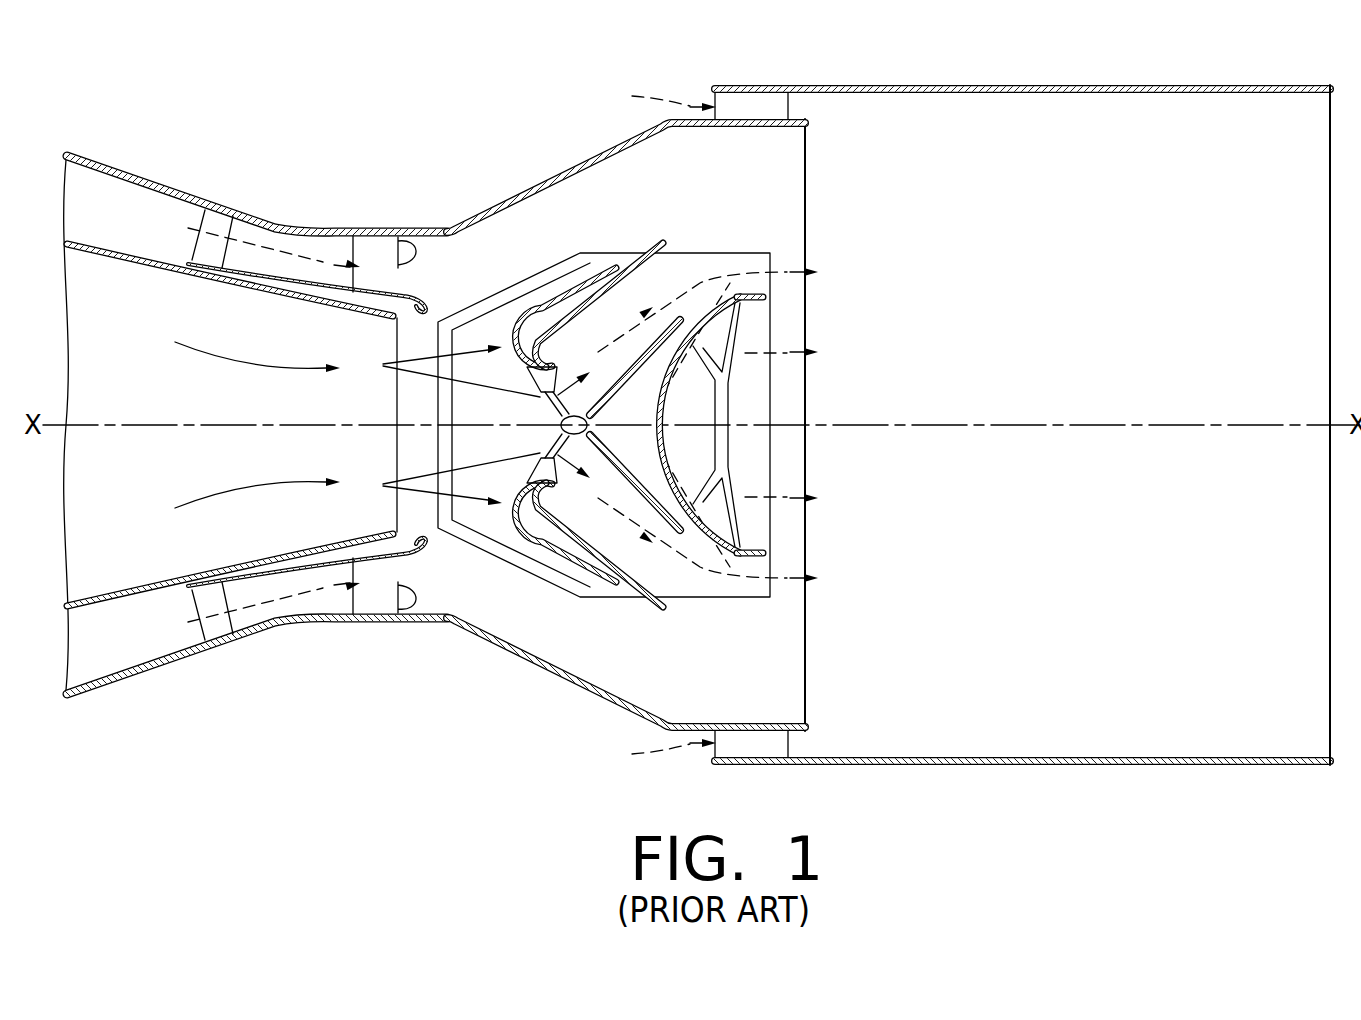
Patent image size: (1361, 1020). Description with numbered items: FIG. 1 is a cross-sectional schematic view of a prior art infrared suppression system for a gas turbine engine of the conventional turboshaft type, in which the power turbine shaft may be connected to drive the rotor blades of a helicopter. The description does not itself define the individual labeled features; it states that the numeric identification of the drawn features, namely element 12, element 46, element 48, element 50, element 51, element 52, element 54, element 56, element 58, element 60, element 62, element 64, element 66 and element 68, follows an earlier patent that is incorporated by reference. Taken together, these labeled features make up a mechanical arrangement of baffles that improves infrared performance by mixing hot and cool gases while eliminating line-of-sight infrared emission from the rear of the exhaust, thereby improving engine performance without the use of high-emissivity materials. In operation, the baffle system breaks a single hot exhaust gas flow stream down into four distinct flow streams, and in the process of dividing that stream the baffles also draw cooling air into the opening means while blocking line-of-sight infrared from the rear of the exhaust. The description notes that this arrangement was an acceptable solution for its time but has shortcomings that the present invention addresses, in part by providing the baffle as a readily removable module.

The combustor 12 is at (512, 182).
The compressor discharge air 46 is at (274, 198).
The diffuser passage 48 is at (170, 478).
The cooling air flow 50 is at (622, 126).
The seal 51 is at (406, 236).
The turbine nozzle plenum 52 is at (1088, 332).
The mounting flange 54 is at (753, 102).
The inner casing wall 56 is at (126, 290).
The diffuser liner 58 is at (165, 270).
The outer casing 60 is at (114, 164).
The swirler 62 is at (571, 281).
The dome 64 is at (720, 550).
The fuel nozzle 66 is at (560, 430).
The casing wall 68 is at (1335, 108).